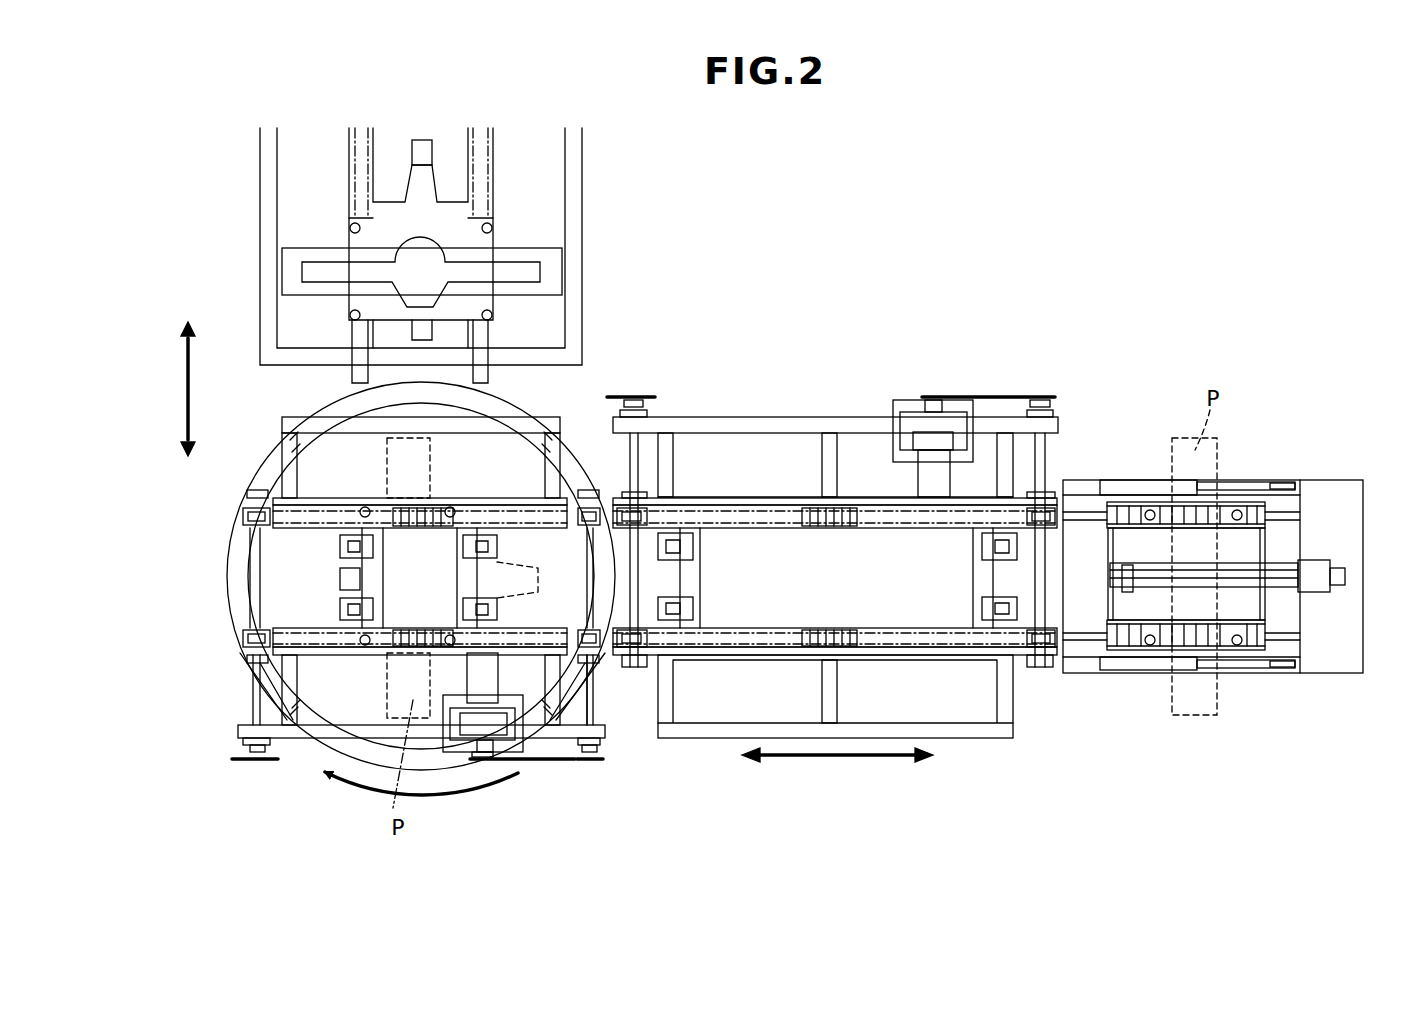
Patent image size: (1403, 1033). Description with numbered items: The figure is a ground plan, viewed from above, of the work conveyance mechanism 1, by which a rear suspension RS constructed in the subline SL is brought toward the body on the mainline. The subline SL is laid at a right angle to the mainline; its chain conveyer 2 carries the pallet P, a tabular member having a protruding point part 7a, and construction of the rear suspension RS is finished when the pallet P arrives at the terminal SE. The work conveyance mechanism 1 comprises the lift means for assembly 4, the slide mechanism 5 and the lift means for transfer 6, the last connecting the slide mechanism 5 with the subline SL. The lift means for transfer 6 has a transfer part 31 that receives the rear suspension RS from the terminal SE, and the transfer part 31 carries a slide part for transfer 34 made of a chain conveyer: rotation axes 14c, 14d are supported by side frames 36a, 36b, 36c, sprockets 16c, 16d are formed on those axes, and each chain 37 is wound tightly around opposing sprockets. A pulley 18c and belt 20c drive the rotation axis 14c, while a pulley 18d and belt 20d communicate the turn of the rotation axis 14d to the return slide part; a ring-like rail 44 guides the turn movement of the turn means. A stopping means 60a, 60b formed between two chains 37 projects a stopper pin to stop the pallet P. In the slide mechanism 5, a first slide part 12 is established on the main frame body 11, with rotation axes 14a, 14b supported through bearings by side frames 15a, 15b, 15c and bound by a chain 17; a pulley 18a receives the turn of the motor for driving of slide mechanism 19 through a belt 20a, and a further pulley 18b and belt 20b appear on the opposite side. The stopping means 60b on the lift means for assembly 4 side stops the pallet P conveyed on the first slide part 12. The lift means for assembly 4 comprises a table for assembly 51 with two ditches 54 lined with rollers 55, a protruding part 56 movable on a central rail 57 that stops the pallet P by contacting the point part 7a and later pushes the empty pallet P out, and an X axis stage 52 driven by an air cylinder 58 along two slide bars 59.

The work conveyance mechanism 1 is at (1070, 258).
The chain conveyer 2 is at (347, 140).
The protruding point part 7a is at (422, 148).
The subline SL is at (263, 200).
The rear suspension RS is at (512, 270).
The pallet P is at (548, 272).
The terminal SE is at (550, 355).
The lift means for assembly 4 is at (1240, 725).
The slide mechanism 5 is at (853, 767).
The lift means for transfer 6 is at (365, 800).
The main frame body 11 is at (975, 735).
The first slide part 12 is at (867, 488).
The rotation axis 14a is at (1045, 468).
The rotation axis 14b is at (633, 455).
The rotation axis 14c is at (598, 707).
The rotation axis 14d is at (252, 590).
The side frame 15a is at (1058, 425).
The side frame 15b is at (1038, 405).
The side frame 15c is at (1023, 667).
The sprocket 16c is at (580, 525).
The sprocket 16d is at (250, 526).
The chain 17 is at (812, 505).
The pulley 18a is at (1053, 398).
The pulley 18b is at (658, 401).
The pulley 18c is at (590, 762).
The pulley 18d is at (270, 762).
The motor for driving of slide mechanism 19 is at (935, 468).
The belt 20a is at (983, 395).
The belt 20b is at (633, 395).
The belt 20c is at (555, 762).
The belt 20d is at (240, 762).
The transfer part 31 is at (275, 425).
The slide part for transfer 34 is at (330, 500).
The side frame 36a is at (240, 735).
The side frame 36b is at (245, 657).
The side frame 36c is at (245, 495).
The chain 37 is at (437, 505).
The rail 44 is at (430, 767).
The table for assembly 51 is at (1245, 505).
The X axis stage 52 is at (1303, 503).
The ditches 54 is at (1127, 513).
The rollers 55 is at (1117, 640).
The protruding part 56 is at (1320, 560).
The rail 57 is at (1275, 595).
The air cylinder 58 is at (1152, 665).
The slide bars 59 is at (1085, 520).
The stopping means 60a is at (338, 594).
The stopping means 60b is at (461, 594).